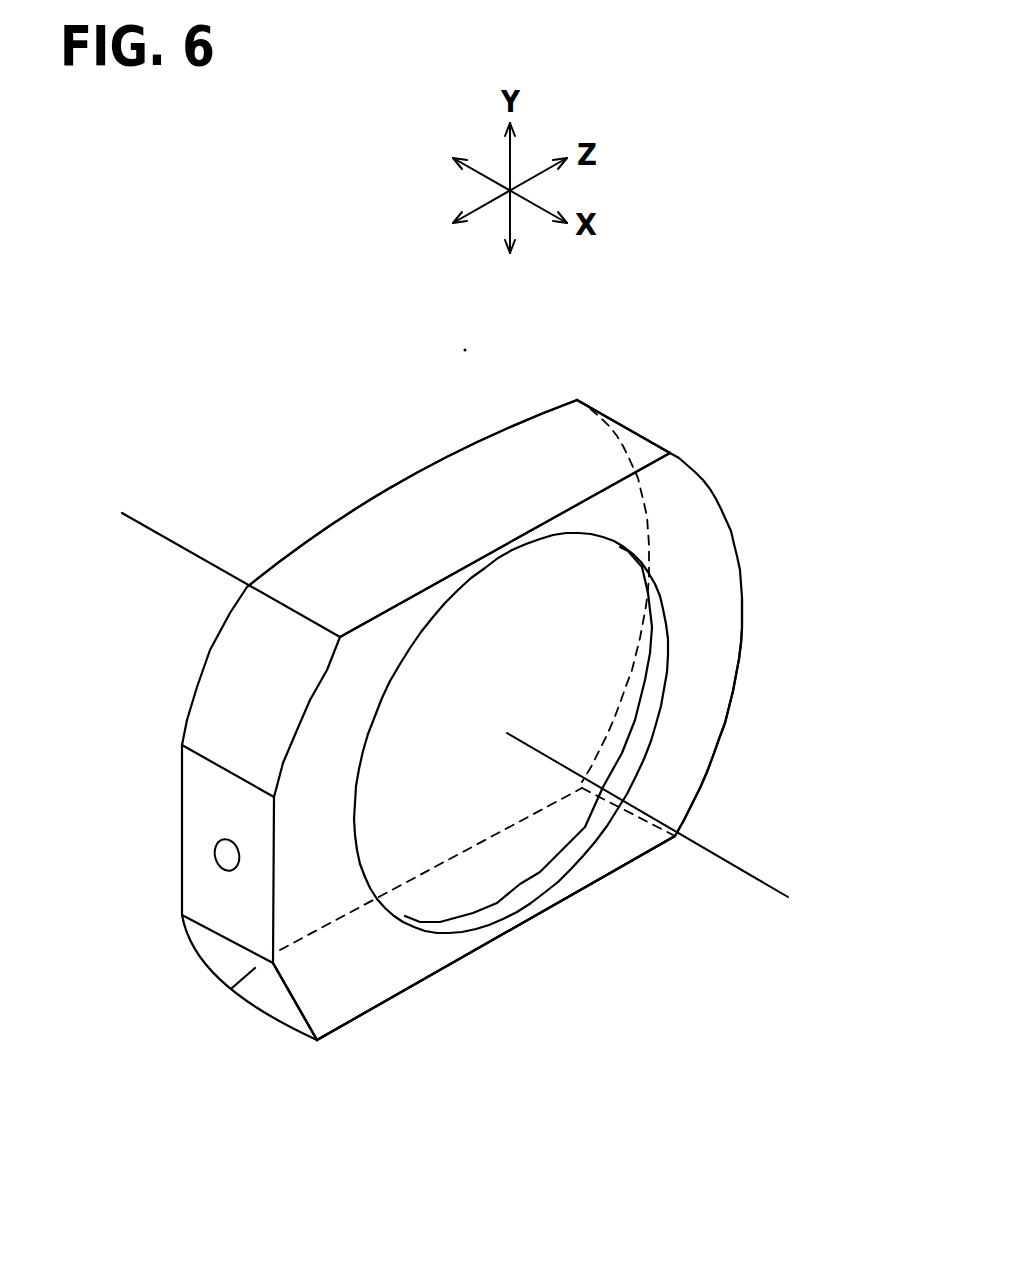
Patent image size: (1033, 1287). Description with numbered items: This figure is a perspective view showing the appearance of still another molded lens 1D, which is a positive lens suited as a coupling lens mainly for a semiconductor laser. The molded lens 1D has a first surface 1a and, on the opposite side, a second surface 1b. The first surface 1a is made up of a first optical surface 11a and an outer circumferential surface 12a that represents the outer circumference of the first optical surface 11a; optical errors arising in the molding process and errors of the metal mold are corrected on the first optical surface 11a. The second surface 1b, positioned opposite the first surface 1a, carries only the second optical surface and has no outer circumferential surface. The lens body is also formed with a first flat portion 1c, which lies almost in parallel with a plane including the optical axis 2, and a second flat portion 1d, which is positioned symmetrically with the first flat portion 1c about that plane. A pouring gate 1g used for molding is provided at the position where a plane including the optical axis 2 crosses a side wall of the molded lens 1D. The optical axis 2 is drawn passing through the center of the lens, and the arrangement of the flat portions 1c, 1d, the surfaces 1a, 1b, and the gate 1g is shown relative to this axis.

The molded lens 1D is at (365, 419).
The first surface 1a is at (421, 1101).
The first optical surface 11a is at (403, 848).
The outer circumferential surface 12a is at (324, 965).
The second surface 1b is at (289, 543).
The first flat portion 1c is at (455, 968).
The second flat portion 1d is at (597, 456).
The pouring gate 1g is at (225, 855).
The optical axis 2 is at (747, 870).